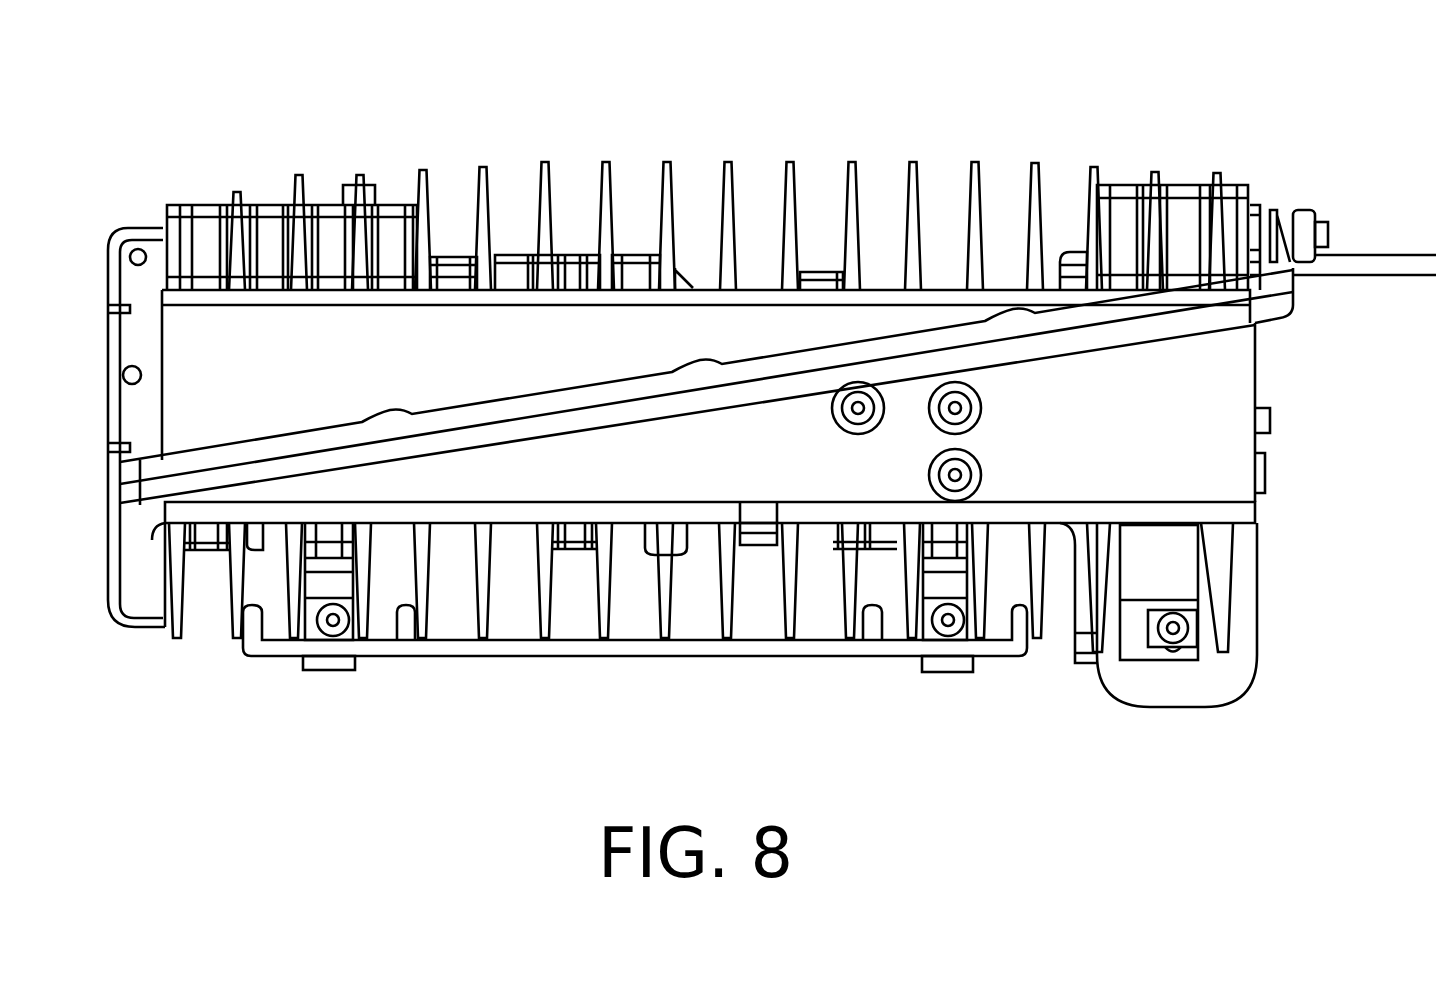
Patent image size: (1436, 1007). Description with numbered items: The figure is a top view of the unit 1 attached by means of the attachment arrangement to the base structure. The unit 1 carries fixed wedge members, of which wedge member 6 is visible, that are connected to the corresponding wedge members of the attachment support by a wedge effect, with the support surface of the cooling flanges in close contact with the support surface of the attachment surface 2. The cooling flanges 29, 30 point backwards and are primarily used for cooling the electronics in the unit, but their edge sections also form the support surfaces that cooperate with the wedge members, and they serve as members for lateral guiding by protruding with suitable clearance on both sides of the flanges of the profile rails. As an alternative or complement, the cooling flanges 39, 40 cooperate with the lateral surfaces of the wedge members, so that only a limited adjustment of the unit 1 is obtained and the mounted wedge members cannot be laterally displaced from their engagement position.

The unit 1 is at (957, 123).
The attachment surface 2 is at (986, 660).
The wedge member 6 is at (338, 588).
The cooling flange 29 is at (237, 580).
The cooling flange 30 is at (422, 585).
The cooling flange 39 is at (295, 590).
The cooling flange 40 is at (360, 590).